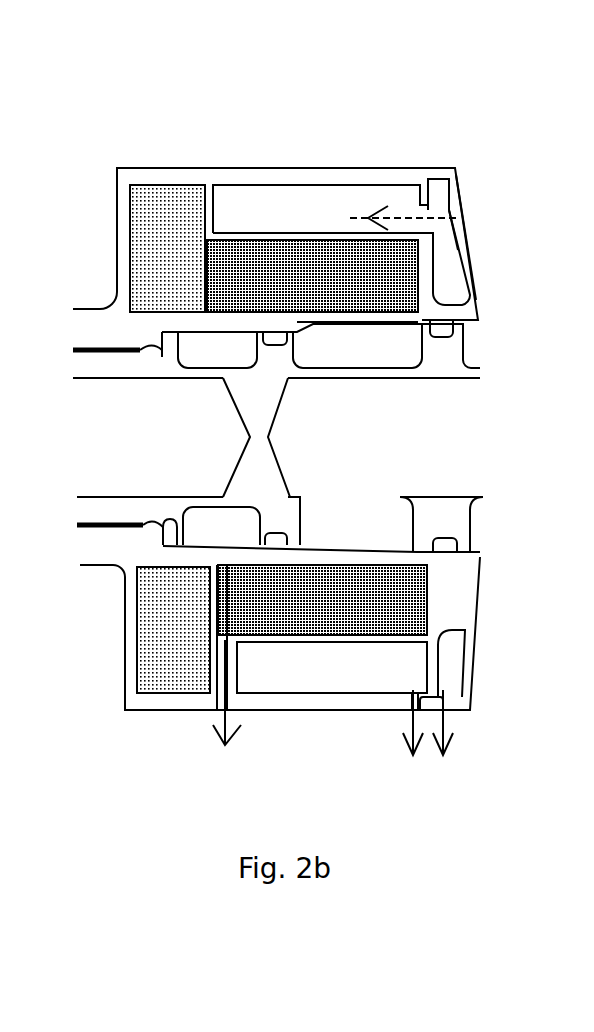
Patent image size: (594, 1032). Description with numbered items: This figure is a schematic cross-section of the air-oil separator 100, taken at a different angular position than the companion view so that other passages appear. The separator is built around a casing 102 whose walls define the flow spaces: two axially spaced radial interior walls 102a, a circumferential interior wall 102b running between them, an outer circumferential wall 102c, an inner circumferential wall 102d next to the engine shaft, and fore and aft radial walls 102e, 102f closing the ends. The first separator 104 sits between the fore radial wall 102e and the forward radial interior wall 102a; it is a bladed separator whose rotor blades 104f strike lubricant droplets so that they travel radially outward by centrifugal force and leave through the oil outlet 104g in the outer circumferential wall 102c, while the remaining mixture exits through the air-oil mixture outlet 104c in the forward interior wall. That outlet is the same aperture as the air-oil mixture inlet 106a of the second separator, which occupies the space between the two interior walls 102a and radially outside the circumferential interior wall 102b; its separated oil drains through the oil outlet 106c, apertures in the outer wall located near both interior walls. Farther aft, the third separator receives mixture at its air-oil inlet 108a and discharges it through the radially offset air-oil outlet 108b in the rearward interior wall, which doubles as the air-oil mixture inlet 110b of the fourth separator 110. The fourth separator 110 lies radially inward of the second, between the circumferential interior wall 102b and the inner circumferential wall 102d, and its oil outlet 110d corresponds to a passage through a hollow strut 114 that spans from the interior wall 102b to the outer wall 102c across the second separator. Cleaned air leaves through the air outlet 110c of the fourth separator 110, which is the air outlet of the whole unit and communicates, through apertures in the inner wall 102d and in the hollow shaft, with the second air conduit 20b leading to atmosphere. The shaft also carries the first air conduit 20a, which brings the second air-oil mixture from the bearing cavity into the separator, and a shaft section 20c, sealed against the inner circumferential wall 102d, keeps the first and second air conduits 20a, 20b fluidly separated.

The air-oil separator 100 is at (552, 78).
The casing 102 is at (119, 163).
The radial interior walls 102a is at (428, 208).
The circumferential interior wall 102b is at (302, 642).
The outer circumferential wall 102c is at (157, 703).
The inner circumferential wall 102d is at (94, 549).
The fore radial wall 102e is at (470, 236).
The aft radial wall 102f is at (116, 236).
The first separator 104 is at (460, 590).
The first separator air-oil mixture outlet 104c is at (434, 211).
The rotor blades 104f is at (454, 656).
The first separator oil outlet 104g is at (470, 712).
The second separator air-oil mixture inlet 106a is at (403, 212).
The second separator oil outlet 106c is at (404, 702).
The third separator air-oil inlet 108a is at (215, 200).
The third separator air-oil outlet 108b is at (197, 300).
The fourth separator 110 is at (353, 580).
The fourth separator air-oil mixture inlet 110b is at (220, 296).
The fourth separator air outlet 110c is at (394, 322).
The fourth separator oil outlet 110d is at (212, 665).
The hollow strut 114 is at (265, 682).
The first air conduit 20a is at (185, 467).
The second air conduit 20b is at (405, 412).
The shaft section 20c is at (268, 399).